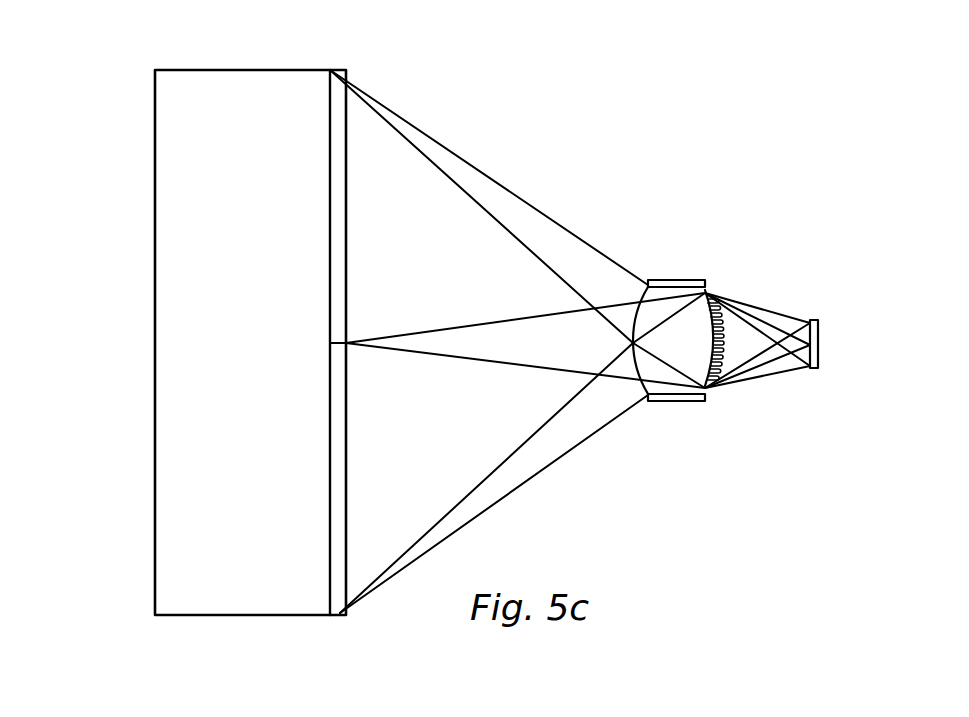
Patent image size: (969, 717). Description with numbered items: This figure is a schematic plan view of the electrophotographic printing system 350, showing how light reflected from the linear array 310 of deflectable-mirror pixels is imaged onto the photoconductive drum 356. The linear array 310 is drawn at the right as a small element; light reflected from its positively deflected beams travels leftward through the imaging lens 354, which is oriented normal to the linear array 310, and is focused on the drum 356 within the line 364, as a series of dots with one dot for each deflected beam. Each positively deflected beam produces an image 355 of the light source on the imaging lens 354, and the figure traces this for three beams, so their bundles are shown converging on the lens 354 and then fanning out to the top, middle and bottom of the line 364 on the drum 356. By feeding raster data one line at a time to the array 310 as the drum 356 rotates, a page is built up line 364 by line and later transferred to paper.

The system 350 is at (86, 38).
The photoconductive drum 356 is at (277, 369).
The line 364 is at (331, 249).
The imaging lens 354 is at (676, 280).
The image 355 is at (726, 328).
The linear array 310 is at (818, 332).